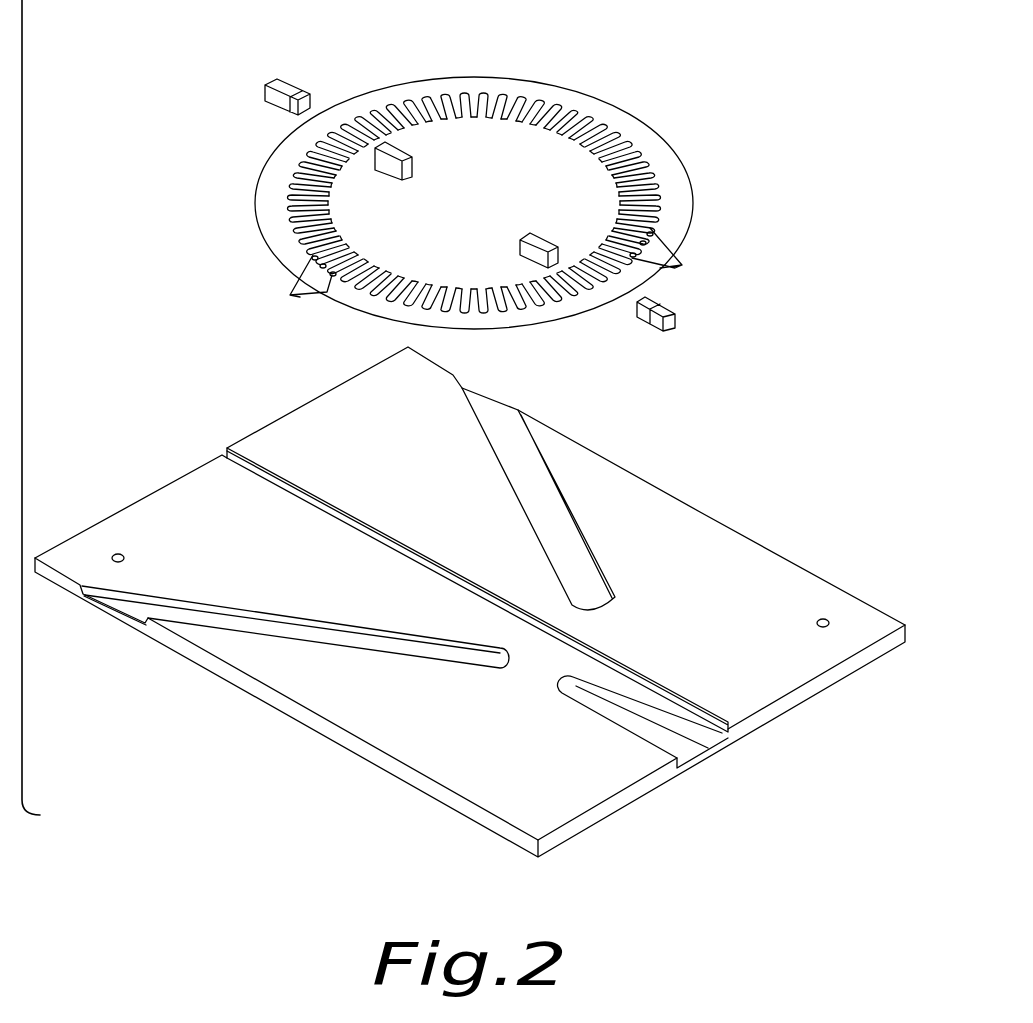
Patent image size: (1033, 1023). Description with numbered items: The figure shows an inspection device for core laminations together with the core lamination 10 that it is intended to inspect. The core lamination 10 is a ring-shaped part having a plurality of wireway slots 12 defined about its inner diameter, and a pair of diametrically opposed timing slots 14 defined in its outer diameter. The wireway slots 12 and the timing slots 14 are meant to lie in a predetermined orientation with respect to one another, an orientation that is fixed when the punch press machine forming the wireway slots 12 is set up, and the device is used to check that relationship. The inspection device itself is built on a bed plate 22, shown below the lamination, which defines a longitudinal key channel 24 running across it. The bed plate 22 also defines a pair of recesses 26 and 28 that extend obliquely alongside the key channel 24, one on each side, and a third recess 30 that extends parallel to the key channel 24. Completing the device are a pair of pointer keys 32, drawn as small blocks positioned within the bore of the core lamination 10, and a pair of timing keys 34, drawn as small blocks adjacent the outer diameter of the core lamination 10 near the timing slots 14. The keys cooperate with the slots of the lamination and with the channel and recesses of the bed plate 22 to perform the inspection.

The core lamination 10 is at (521, 181).
The wireway slots 12 is at (483, 93).
The timing slots 14 is at (318, 110).
The bed plate 22 is at (470, 602).
The key channel 24 is at (356, 525).
The recess 26 is at (313, 635).
The recess 28 is at (570, 535).
The third recess 30 is at (628, 718).
The pointer keys 32 is at (398, 180).
The timing keys 34 is at (283, 85).